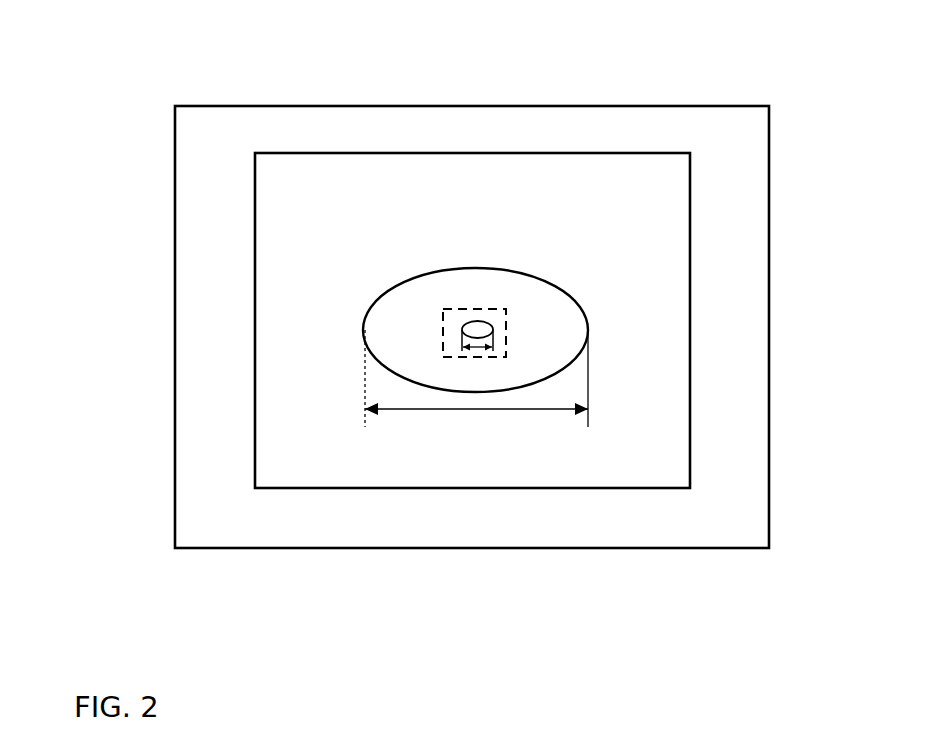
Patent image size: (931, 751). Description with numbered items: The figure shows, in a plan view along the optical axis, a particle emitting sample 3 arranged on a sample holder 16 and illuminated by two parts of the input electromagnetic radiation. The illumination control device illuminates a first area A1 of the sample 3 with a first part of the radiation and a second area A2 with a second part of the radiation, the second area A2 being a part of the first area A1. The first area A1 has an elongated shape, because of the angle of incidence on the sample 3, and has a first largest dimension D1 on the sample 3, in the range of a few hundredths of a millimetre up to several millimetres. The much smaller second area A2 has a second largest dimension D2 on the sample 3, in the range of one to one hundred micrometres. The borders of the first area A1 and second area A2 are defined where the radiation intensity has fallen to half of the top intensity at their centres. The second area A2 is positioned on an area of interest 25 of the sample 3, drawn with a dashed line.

The sample holder 16 is at (190, 187).
The particle emitting sample 3 is at (263, 429).
The area of interest 25 is at (443, 318).
The first area A1 is at (412, 278).
The second area A2 is at (475, 321).
The first largest dimension D1 is at (460, 410).
The second largest dimension D2 is at (476, 348).